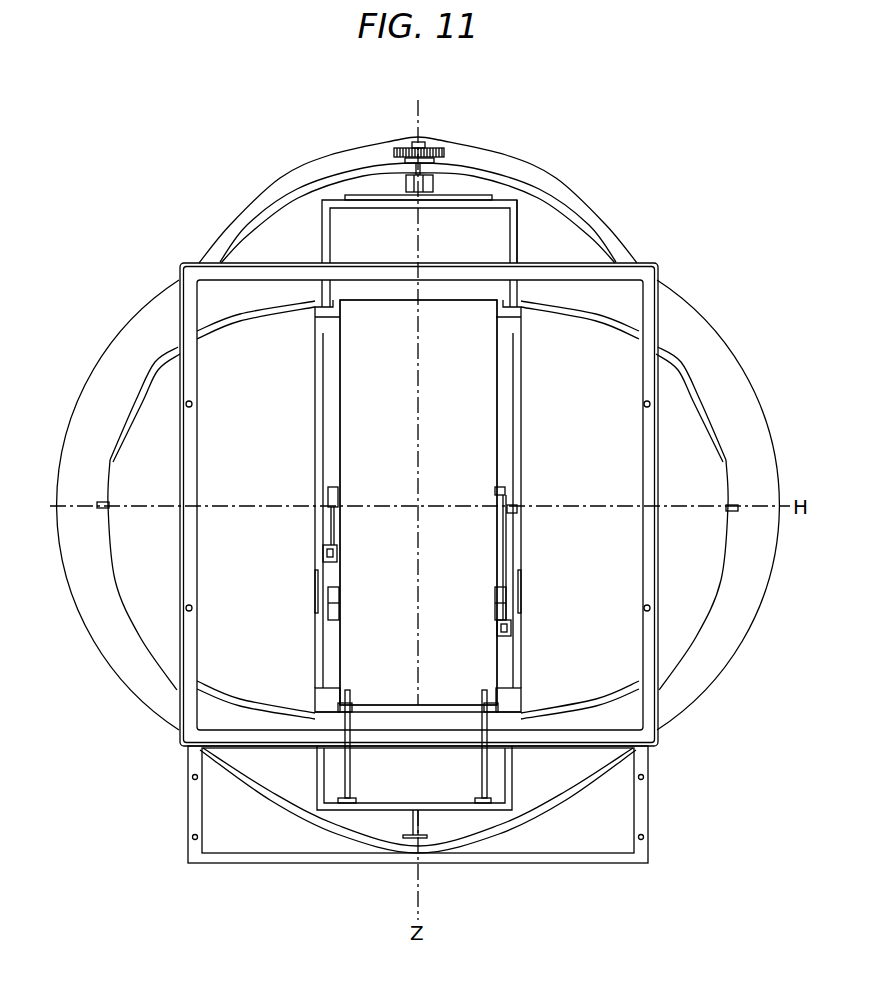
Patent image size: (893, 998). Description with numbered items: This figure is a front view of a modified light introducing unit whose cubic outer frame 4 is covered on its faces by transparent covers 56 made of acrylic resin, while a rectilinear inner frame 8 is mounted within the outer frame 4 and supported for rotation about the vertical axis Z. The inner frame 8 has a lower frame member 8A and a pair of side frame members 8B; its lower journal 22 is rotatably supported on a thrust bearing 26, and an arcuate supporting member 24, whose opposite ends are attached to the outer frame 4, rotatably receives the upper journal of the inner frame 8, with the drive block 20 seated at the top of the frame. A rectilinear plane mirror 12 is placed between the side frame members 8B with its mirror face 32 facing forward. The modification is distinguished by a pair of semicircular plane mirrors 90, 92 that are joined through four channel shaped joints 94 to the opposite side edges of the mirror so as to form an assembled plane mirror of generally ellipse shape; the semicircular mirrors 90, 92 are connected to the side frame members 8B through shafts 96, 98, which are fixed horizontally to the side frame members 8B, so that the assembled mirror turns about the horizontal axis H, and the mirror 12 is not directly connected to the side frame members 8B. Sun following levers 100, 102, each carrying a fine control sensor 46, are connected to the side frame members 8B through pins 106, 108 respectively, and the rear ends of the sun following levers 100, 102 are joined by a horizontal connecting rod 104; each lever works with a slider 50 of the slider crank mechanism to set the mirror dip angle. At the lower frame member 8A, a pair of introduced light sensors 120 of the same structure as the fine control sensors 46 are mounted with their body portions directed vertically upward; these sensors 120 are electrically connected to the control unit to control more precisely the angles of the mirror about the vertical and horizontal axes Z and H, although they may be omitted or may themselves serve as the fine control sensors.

The outer frame 4 is at (648, 720).
The inner frame 8 is at (518, 241).
The lower frame member 8A is at (335, 205).
The side frame member 8B is at (322, 420).
The plane mirror 12 is at (405, 312).
The drive block 20 is at (432, 184).
The lower journal 22 is at (420, 822).
The arcuate supporting member 24 is at (540, 197).
The thrust bearing 26 is at (430, 147).
The mirror face 32 is at (416, 392).
The fine control sensor 46 is at (337, 554).
The slider 50 is at (339, 610).
The transparent cover 56 is at (594, 202).
The semicircular plane mirror 90 is at (683, 377).
The semicircular plane mirror 92 is at (163, 362).
The channel shaped joint 94 is at (332, 325).
The shaft 96 is at (733, 505).
The shaft 98 is at (100, 503).
The sun following lever 100 is at (503, 541).
The sun following lever 102 is at (334, 528).
The horizontal connecting rod 104 is at (504, 491).
The pin 106 is at (516, 511).
The pin 108 is at (338, 511).
The introduced light sensor 120 is at (345, 787).